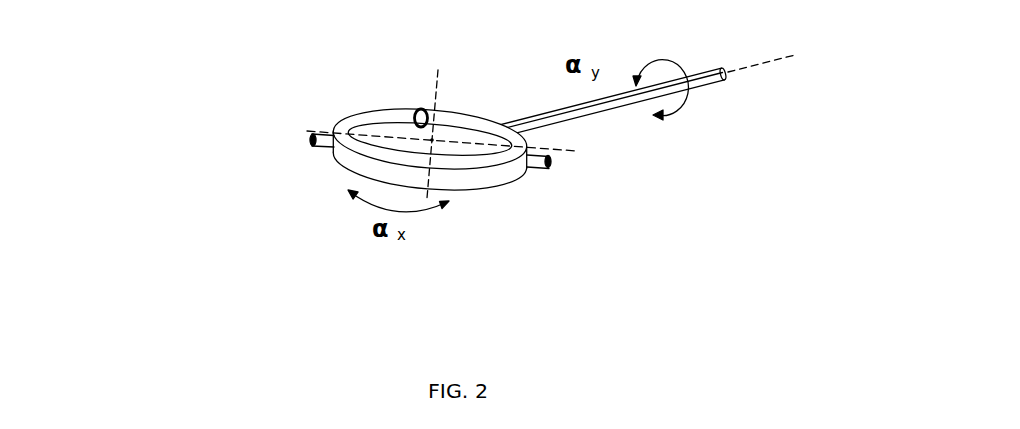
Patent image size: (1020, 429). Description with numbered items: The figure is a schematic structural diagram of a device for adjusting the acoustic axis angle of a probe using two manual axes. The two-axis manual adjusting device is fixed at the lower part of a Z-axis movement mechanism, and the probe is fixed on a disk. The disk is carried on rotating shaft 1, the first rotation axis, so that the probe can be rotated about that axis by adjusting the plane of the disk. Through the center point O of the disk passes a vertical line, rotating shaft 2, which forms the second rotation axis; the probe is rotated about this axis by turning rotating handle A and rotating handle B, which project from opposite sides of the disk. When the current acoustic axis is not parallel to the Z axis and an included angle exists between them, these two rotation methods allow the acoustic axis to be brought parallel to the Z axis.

The rotating shaft 1 is at (773, 68).
The rotating shaft 2 is at (433, 82).
The rotating handle A is at (323, 148).
The rotating handle B is at (608, 212).
The center point O is at (421, 118).